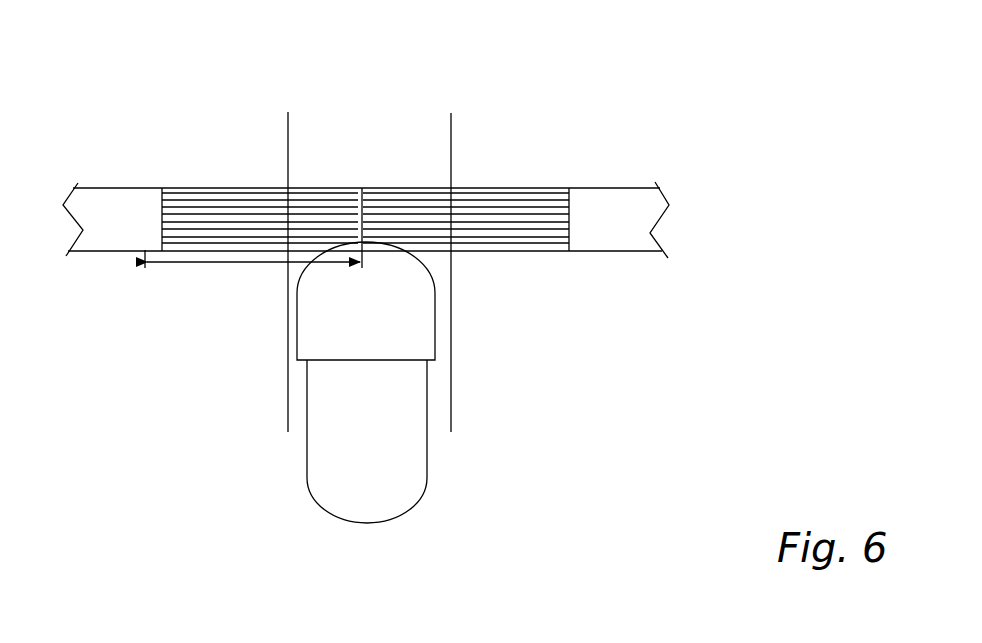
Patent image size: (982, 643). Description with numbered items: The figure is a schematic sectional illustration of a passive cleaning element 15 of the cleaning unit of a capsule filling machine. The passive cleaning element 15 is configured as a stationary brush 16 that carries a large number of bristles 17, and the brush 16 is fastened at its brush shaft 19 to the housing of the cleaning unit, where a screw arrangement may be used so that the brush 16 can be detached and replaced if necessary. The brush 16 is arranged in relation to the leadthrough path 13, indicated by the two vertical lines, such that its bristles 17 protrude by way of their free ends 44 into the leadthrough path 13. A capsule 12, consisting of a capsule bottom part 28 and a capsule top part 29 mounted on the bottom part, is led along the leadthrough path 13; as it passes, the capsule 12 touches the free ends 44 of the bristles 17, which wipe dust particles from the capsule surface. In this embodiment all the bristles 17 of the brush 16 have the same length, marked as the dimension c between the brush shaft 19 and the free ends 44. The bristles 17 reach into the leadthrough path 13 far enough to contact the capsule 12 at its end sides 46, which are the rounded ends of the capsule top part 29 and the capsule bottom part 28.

The capsule 12 is at (361, 410).
The leadthrough path 13 is at (285, 121).
The cleaning element 15 is at (361, 239).
The brush 16 is at (147, 200).
The bristles 17 is at (230, 184).
The brush shaft 19 is at (130, 252).
The capsule bottom part 28 is at (325, 492).
The capsule top part 29 is at (305, 347).
The free ends 44 is at (360, 188).
The end sides 46 is at (364, 242).